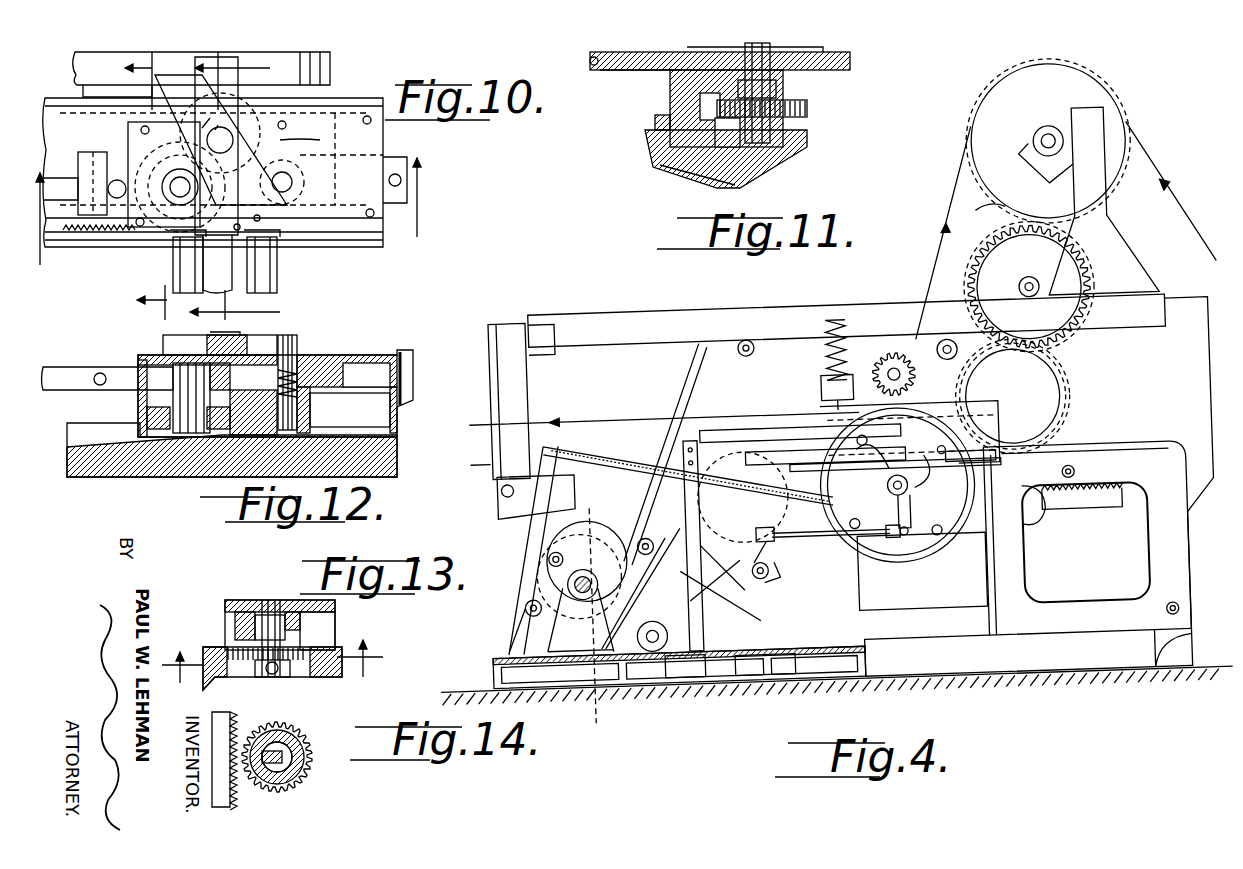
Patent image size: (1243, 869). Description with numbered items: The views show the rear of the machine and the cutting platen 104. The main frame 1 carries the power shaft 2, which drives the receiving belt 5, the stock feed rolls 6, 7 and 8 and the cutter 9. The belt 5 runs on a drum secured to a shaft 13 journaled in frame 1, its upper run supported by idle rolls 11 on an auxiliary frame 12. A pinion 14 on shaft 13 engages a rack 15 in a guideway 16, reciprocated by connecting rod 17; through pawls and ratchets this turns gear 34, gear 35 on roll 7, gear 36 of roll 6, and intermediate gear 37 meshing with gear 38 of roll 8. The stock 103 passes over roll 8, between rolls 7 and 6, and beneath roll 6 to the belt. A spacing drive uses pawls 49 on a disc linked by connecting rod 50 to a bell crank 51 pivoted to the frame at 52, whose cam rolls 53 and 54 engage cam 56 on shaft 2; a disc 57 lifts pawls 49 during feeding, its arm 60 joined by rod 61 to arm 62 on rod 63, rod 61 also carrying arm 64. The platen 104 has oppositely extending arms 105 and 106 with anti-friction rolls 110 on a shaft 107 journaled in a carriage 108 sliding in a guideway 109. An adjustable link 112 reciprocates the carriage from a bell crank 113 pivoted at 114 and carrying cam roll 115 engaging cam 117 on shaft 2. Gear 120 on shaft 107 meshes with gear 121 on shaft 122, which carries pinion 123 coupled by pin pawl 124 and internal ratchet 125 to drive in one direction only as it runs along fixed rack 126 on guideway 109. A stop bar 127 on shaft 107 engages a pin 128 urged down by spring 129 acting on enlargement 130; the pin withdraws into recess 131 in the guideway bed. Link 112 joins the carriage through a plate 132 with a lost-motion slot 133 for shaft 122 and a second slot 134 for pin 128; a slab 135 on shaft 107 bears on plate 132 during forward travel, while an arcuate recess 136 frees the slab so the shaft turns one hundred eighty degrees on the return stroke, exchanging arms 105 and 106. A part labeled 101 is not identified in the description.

In FIG. 4, the main frame 1 is at (1030, 584).
In FIG. 4, the power shaft 2 is at (565, 578).
In FIG. 4, the receiving belt 5 is at (725, 412).
In FIG. 4, the stock feed roll 6 is at (860, 312).
In FIG. 4, the stock feed roll 7 is at (900, 330).
In FIG. 4, the stock feed roll 8 is at (1010, 143).
In FIG. 4, the cutter 9 is at (828, 378).
In FIG. 10, the idle rolls 11 is at (252, 189).
In FIG. 10, the auxiliary frame 12 is at (237, 223).
In FIG. 10, the shaft 13 is at (129, 186).
In FIG. 4, the shaft 13 is at (978, 481).
In FIG. 13, the pinion 14 is at (272, 678).
In FIG. 4, the rack 15 is at (1087, 510).
In FIG. 4, the guideway 16 is at (1032, 522).
In FIG. 4, the connecting rod 17 is at (772, 648).
In FIG. 4, the gear 34 is at (1045, 417).
In FIG. 4, the gear 35 is at (847, 324).
In FIG. 4, the driving gear 36 is at (755, 355).
In FIG. 4, the intermediate gear 37 is at (1060, 250).
In FIG. 4, the gear 38 is at (1000, 200).
In FIG. 4, the pawls 49 is at (900, 568).
In FIG. 4, the connecting rod 50 is at (618, 452).
In FIG. 4, the bell crank 51 is at (525, 550).
In FIG. 4, the pivot 52 is at (522, 598).
In FIG. 4, the cam roll 53 is at (678, 621).
In FIG. 4, the cam roll 54 is at (581, 567).
In FIG. 4, the cam 56 is at (582, 569).
In FIG. 4, the disc 57 is at (905, 560).
In FIG. 4, the arm 60 is at (923, 503).
In FIG. 4, the rod 61 is at (836, 542).
In FIG. 4, the arm 62 is at (755, 545).
In FIG. 4, the rod 63 is at (781, 566).
In FIG. 4, the second arm 64 is at (740, 600).
In FIG. 11, the shaft 101 is at (766, 81).
In FIG. 4, the stock 103 is at (960, 217).
In FIG. 4, the platen 104 is at (1035, 398).
In FIG. 10, the arm 105 is at (240, 65).
In FIG. 11, the arm 105 is at (825, 66).
In FIG. 10, the arm 106 is at (262, 290).
In FIG. 11, the arm 106 is at (630, 73).
In FIG. 10, the shaft 107 is at (304, 128).
In FIG. 12, the shaft 107 is at (215, 334).
In FIG. 10, the carriage 108 is at (367, 130).
In FIG. 11, the carriage 108 is at (648, 140).
In FIG. 10, the guideway 109 is at (353, 243).
In FIG. 11, the guideway 109 is at (667, 160).
In FIG. 10, the anti-friction rolls 110 is at (277, 268).
In FIG. 11, the anti-friction rolls 110 is at (594, 60).
In FIG. 10, the adjustable link 112 is at (57, 139).
In FIG. 12, the adjustable link 112 is at (105, 375).
In FIG. 4, the adjustable link 112 is at (778, 426).
In FIG. 4, the bell crank 113 is at (758, 645).
In FIG. 4, the pivot 114 is at (650, 648).
In FIG. 4, the cam roll 115 is at (644, 532).
In FIG. 4, the cam 117 is at (598, 515).
In FIG. 10, the gear 120 is at (248, 118).
In FIG. 11, the gear 120 is at (808, 108).
In FIG. 10, the gear 121 is at (130, 160).
In FIG. 12, the gear 121 is at (145, 400).
In FIG. 13, the gear 121 is at (235, 640).
In FIG. 10, the shaft 122 is at (150, 230).
In FIG. 12, the shaft 122 is at (173, 370).
In FIG. 13, the shaft 122 is at (262, 600).
In FIG. 12, the pinion 123 is at (160, 432).
In FIG. 13, the pinion 123 is at (315, 645).
In FIG. 14, the pinion 123 is at (300, 733).
In FIG. 13, the pin pawl 124 is at (275, 680).
In FIG. 14, the pin pawl 124 is at (272, 792).
In FIG. 13, the internal ratchet 125 is at (270, 698).
In FIG. 10, the fixed rack 126 is at (85, 245).
In FIG. 11, the fixed rack 126 is at (655, 123).
In FIG. 13, the fixed rack 126 is at (230, 652).
In FIG. 14, the fixed rack 126 is at (225, 805).
In FIG. 10, the positioning stop bar 127 is at (300, 245).
In FIG. 12, the positioning stop bar 127 is at (262, 330).
In FIG. 10, the pin 128 is at (283, 173).
In FIG. 12, the pin 128 is at (300, 345).
In FIG. 12, the spring 129 is at (305, 360).
In FIG. 12, the enlargement 130 is at (303, 412).
In FIG. 12, the recess 131 is at (90, 455).
In FIG. 10, the plate 132 is at (95, 170).
In FIG. 11, the plate 132 is at (692, 96).
In FIG. 12, the plate 132 is at (110, 368).
In FIG. 13, the plate 132 is at (235, 615).
In FIG. 10, the slot 133 is at (120, 210).
In FIG. 12, the slot 133 is at (130, 375).
In FIG. 10, the second slot 134 is at (376, 175).
In FIG. 12, the second slot 134 is at (355, 360).
In FIG. 10, the slab 135 is at (200, 100).
In FIG. 11, the slab 135 is at (780, 92).
In FIG. 10, the arcuate recess 136 is at (179, 180).